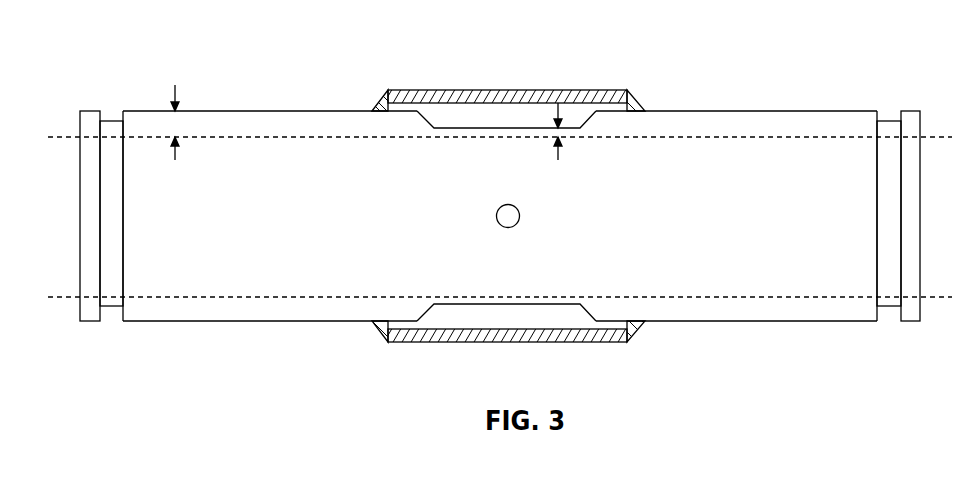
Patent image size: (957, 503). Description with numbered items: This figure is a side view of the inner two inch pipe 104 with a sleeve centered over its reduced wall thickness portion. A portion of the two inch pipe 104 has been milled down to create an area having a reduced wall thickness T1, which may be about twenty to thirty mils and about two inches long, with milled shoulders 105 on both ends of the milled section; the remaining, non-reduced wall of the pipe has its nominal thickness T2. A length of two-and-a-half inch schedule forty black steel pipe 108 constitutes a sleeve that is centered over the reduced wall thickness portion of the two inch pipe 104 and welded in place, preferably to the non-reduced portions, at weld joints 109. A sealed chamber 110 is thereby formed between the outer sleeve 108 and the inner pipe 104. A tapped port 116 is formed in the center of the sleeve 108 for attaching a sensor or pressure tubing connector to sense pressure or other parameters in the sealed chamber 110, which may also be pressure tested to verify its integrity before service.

The two inch pipe 104 is at (795, 117).
The milled shoulders 105 is at (422, 117).
The 2½ inch pipe 108 is at (600, 90).
The weld joints 109 is at (643, 102).
The sealed chamber 110 is at (467, 318).
The tapped port 116 is at (520, 220).
The reduced wall thickness T1 is at (561, 148).
The thickness T2 is at (178, 148).